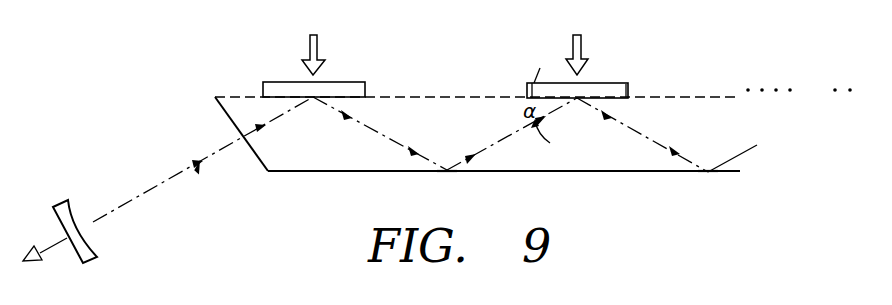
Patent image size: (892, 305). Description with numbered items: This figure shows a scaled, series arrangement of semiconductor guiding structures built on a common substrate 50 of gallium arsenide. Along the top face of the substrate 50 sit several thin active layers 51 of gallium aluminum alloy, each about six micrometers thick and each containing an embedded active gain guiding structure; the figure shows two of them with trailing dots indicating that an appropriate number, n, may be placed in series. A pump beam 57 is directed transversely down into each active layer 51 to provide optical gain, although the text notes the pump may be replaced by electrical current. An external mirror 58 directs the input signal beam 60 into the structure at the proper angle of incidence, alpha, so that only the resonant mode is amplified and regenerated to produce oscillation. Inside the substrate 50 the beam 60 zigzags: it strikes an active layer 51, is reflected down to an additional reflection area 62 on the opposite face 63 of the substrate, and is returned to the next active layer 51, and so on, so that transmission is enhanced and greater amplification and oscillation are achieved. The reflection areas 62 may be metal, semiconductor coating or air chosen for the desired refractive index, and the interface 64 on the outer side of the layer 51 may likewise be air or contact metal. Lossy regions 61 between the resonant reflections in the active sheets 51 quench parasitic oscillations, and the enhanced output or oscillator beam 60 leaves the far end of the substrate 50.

The substrate 50 is at (329, 159).
The layer 51 is at (362, 81).
The pump beam 57 is at (308, 47).
The mirror 58 is at (75, 260).
The beam 60 is at (131, 198).
The lossy regions 61 is at (227, 97).
The reflection areas 62 is at (428, 171).
The bottom surface 63 is at (489, 173).
The interface 64 is at (630, 90).